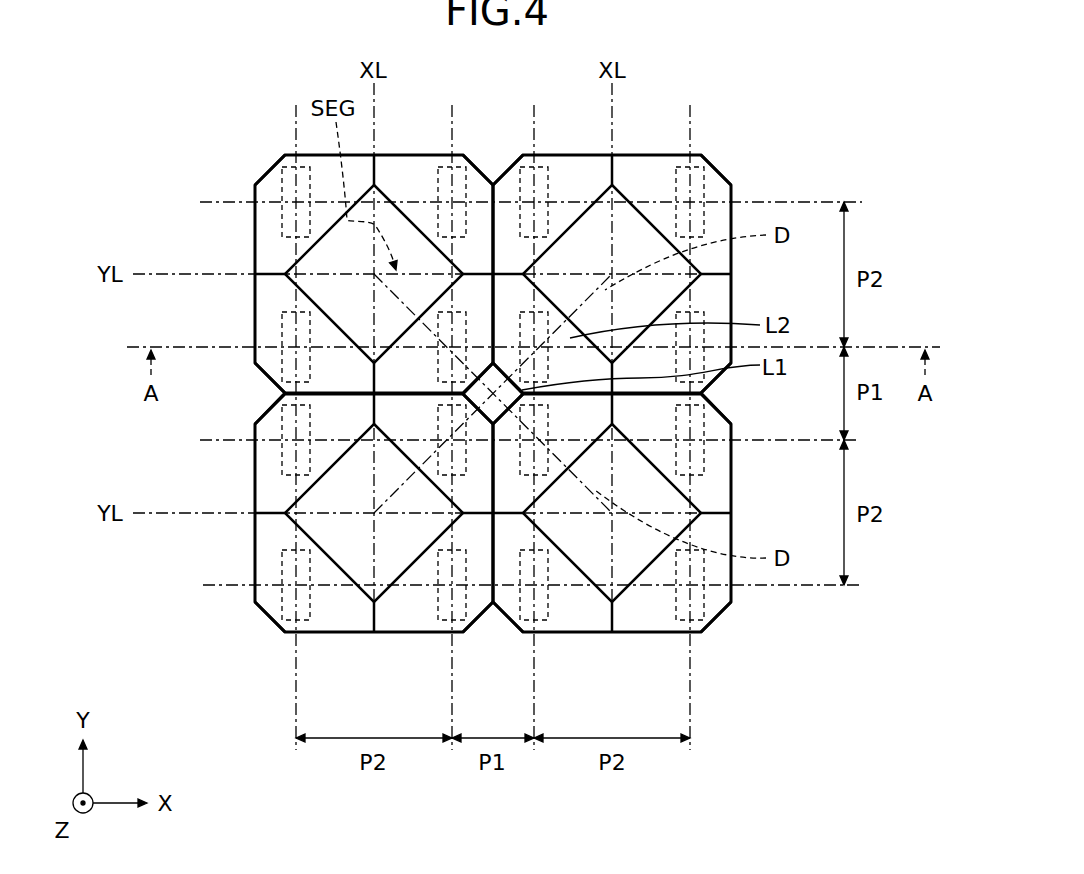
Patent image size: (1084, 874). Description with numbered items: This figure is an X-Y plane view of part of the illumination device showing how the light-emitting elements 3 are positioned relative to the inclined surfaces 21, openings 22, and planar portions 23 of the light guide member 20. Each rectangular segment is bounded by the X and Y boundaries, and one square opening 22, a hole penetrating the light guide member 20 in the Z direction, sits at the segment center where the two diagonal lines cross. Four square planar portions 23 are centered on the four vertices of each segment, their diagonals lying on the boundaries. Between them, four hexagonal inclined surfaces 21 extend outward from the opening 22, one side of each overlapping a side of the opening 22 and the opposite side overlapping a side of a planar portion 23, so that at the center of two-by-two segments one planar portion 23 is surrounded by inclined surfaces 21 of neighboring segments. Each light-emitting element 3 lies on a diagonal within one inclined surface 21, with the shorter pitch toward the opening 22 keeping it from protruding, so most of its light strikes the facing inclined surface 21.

The light-emitting element 3 is at (289, 153).
The light guide member 20 is at (733, 192).
The inclined surface 21 is at (413, 172).
The opening 22 is at (256, 158).
The planar portion 23 is at (648, 247).